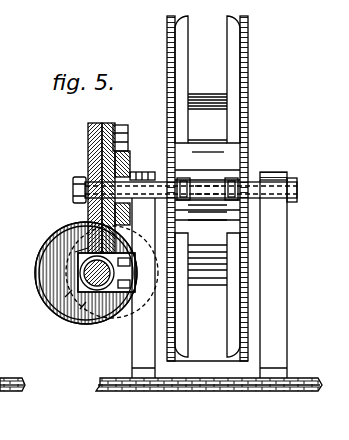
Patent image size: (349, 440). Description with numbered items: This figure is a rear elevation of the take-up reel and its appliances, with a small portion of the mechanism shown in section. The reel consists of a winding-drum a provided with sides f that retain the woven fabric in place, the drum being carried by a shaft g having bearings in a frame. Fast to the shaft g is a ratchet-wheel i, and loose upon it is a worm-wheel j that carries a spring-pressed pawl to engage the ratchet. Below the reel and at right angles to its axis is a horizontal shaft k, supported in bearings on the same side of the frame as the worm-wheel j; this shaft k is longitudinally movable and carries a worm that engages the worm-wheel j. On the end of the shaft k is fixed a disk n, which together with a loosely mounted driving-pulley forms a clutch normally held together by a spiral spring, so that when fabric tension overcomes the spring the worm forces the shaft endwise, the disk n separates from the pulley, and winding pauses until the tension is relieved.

The sides f is at (168, 108).
The winding-drum a is at (207, 185).
The shaft g is at (298, 192).
The worm-wheel j is at (88, 156).
The ratchet-wheel i is at (120, 172).
The horizontal shaft k is at (93, 272).
The disk n is at (65, 297).